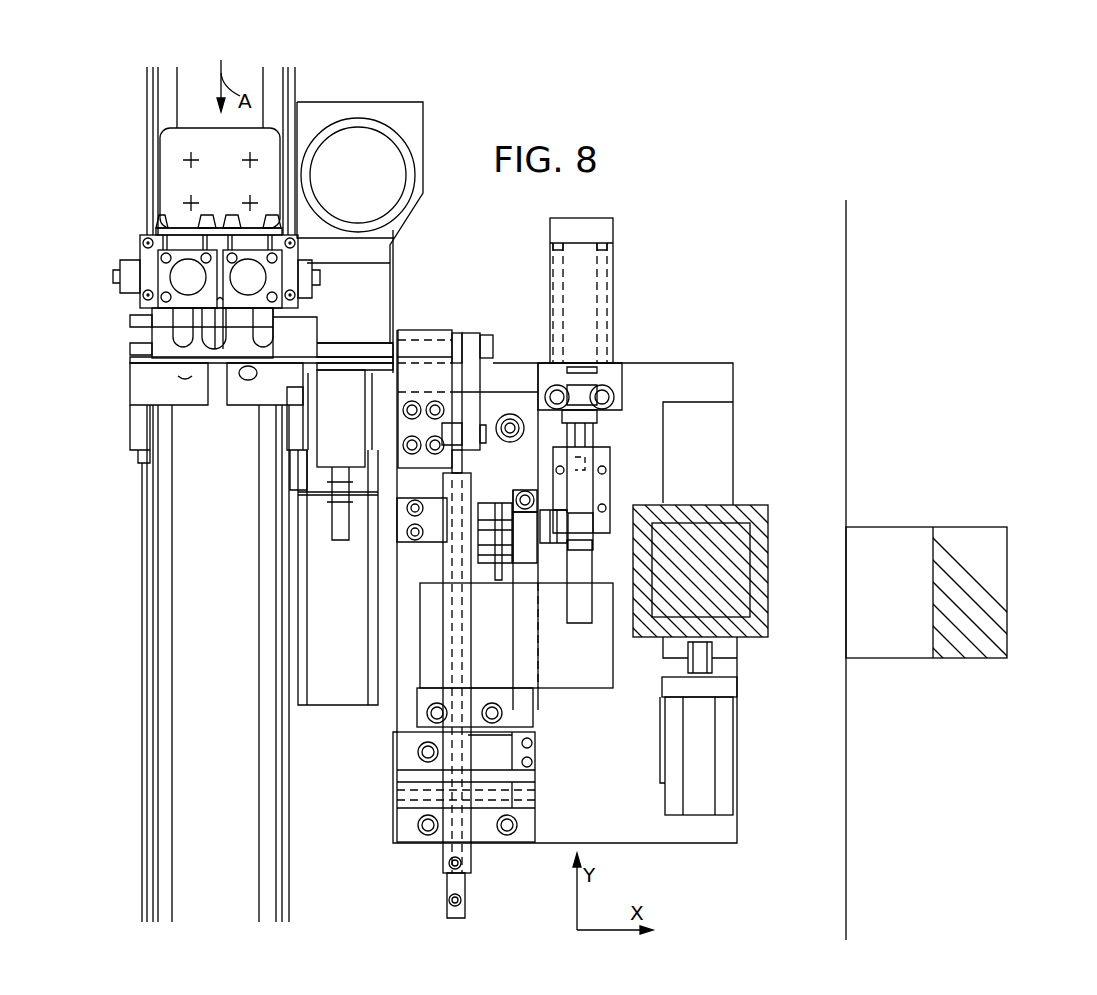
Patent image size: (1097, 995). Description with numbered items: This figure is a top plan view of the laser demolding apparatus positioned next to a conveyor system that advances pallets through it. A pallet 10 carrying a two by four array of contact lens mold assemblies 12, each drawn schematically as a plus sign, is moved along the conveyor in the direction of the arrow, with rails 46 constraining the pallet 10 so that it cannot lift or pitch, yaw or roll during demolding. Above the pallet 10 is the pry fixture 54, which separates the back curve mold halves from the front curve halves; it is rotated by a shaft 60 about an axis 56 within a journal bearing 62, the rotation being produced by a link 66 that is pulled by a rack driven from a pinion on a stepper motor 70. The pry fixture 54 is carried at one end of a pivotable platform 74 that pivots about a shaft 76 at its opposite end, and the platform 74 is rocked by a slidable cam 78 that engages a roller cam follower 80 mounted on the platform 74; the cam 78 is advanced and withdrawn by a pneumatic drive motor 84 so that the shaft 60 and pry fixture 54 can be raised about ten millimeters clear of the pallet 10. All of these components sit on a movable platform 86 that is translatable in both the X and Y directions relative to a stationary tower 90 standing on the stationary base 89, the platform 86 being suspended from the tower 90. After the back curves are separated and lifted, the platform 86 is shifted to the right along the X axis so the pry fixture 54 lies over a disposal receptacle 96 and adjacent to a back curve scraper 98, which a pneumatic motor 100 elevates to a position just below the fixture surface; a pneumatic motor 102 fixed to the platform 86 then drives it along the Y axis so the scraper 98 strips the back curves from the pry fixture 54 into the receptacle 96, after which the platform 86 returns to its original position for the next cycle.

The pallet 10 is at (231, 189).
The contact lens mold assemblies 12 is at (314, 187).
The rails 46 is at (260, 487).
The pry fixture 54 is at (155, 337).
The axis 56 is at (160, 273).
The shaft 60 is at (350, 360).
The journal bearing 62 is at (427, 330).
The link 66 is at (483, 385).
The stepper motor 70 is at (503, 661).
The platform 74 is at (512, 475).
The shaft 76 is at (393, 795).
The slidable cam 78 is at (610, 488).
The roller cam follower 80 is at (605, 536).
The pneumatic drive motor 84 is at (613, 300).
The movable platform 86 is at (644, 436).
The stationary base 89 is at (811, 475).
The stationary tower 90 is at (1007, 592).
The receptacle 96 is at (352, 310).
The back curve scraper 98 is at (350, 343).
The pneumatic motor 100 is at (358, 424).
The pneumatic motor 102 is at (738, 751).